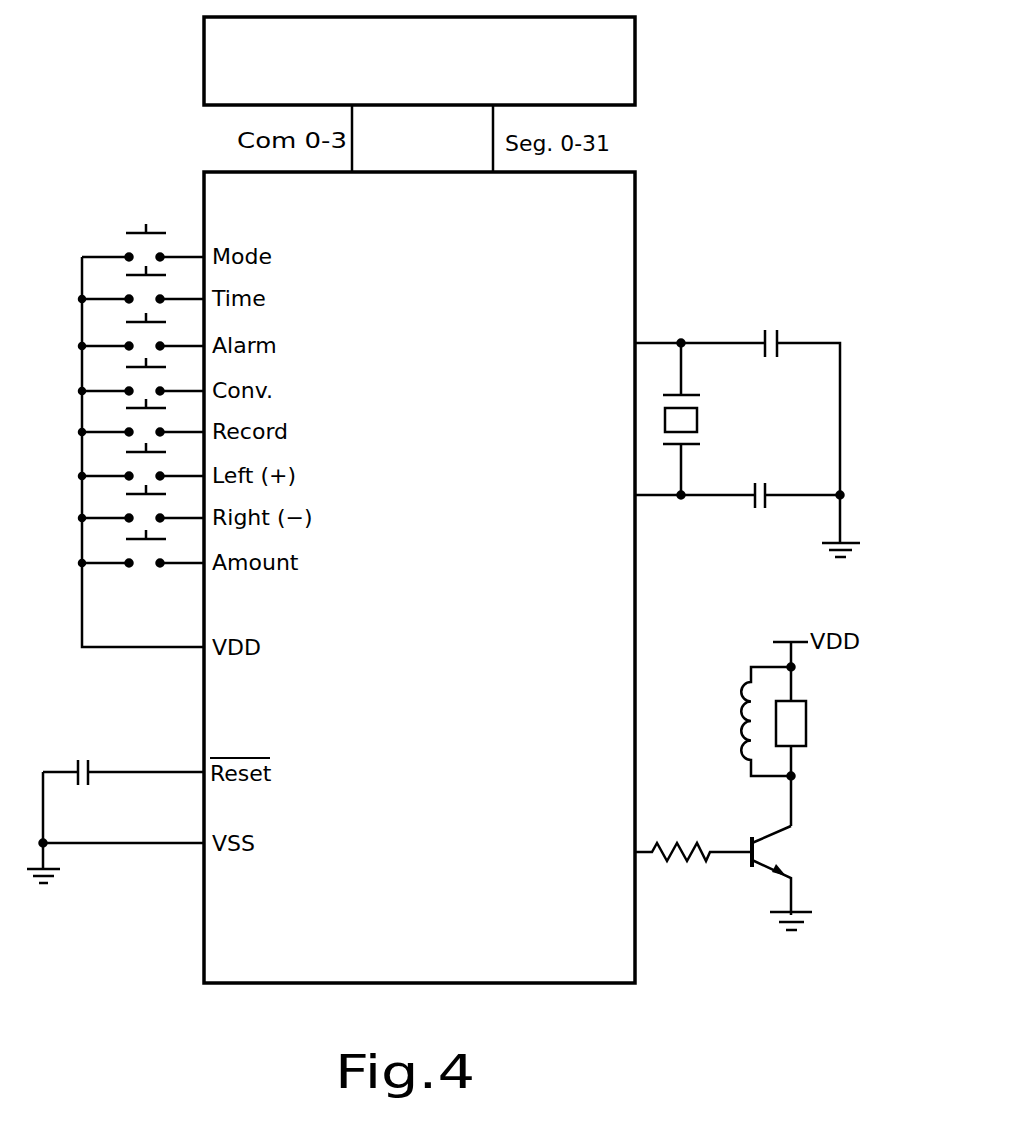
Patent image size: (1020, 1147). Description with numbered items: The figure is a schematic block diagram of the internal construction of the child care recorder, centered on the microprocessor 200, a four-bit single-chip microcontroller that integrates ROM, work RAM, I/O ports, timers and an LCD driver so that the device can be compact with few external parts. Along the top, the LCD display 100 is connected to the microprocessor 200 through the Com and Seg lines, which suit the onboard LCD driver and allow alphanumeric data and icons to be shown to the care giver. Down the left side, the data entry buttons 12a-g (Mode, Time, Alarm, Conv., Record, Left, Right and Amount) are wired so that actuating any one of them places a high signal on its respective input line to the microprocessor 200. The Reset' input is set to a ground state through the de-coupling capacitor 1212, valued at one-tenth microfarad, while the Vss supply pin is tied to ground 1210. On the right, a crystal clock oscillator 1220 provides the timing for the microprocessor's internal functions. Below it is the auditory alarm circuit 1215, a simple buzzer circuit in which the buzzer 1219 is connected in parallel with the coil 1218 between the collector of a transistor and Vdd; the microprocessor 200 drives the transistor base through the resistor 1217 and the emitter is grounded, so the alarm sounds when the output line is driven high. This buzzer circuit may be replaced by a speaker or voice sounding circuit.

The LCD display 100 is at (633, 57).
The microprocessor 200 is at (416, 970).
The data entry buttons 12a-g is at (97, 253).
The de-coupling capacitor 1212 is at (78, 762).
The ground connection 1210 is at (123, 855).
The crystal clock oscillator 1220 is at (851, 355).
The coil 1218 is at (745, 692).
The buzzer 1219 is at (808, 711).
The resistor 1217 is at (690, 840).
The auditory alarm circuit 1215 is at (790, 841).